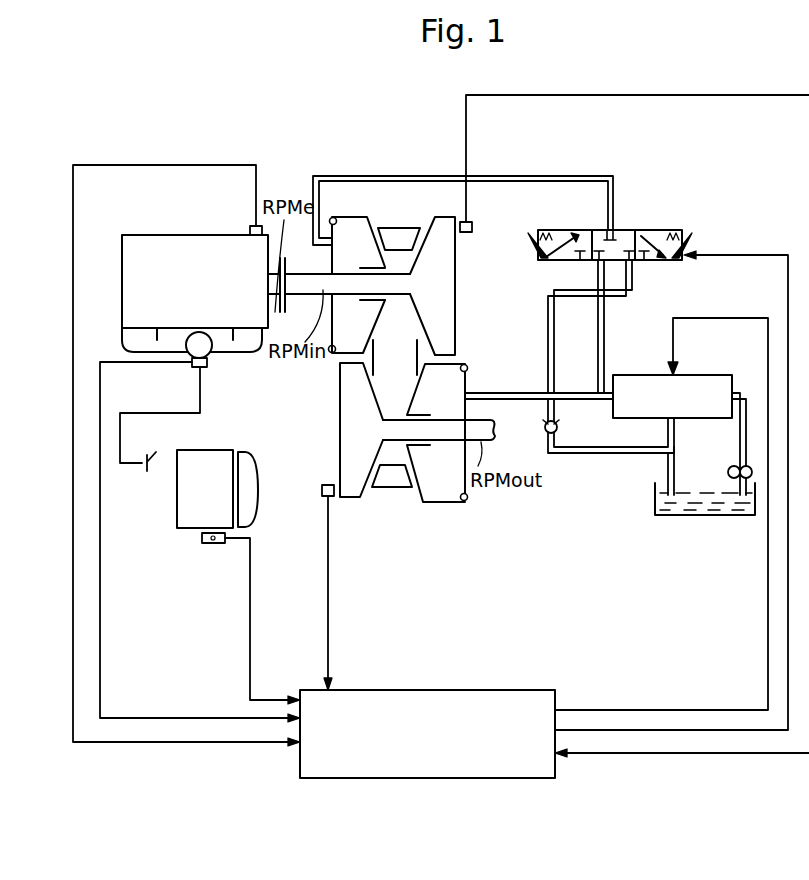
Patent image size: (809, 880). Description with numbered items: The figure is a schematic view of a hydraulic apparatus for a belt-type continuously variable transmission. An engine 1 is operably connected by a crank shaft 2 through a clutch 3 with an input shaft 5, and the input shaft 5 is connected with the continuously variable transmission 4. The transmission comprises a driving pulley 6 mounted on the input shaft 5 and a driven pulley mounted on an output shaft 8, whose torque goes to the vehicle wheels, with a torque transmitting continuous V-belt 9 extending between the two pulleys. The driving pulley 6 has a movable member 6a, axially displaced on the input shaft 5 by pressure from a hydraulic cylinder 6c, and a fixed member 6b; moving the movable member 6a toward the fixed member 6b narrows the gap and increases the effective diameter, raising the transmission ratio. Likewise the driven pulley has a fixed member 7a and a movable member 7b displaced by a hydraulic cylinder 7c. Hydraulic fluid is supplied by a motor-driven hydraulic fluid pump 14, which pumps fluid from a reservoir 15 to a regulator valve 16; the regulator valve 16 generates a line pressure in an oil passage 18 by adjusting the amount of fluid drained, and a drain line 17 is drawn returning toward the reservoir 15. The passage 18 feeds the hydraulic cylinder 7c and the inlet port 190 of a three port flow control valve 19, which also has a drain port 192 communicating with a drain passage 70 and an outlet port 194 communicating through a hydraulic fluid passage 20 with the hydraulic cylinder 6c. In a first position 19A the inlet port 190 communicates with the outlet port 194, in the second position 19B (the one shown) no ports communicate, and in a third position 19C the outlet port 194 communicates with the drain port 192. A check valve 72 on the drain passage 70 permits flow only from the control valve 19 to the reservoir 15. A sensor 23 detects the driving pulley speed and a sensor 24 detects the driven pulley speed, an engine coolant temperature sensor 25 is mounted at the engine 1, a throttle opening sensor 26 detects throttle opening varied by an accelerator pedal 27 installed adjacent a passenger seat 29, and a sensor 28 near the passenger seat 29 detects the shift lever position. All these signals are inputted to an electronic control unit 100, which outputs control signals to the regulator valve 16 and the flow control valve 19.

The engine 1 is at (188, 240).
The crank shaft 2 is at (275, 306).
The clutch 3 is at (287, 272).
The continuously variable transmission 4 is at (403, 170).
The input shaft 5 is at (303, 285).
The driving pulley 6 is at (394, 291).
The movable member 6a is at (345, 358).
The fixed member 6b is at (448, 340).
The hydraulic cylinder 6c is at (353, 225).
The fixed member 7a is at (357, 497).
The movable member 7b is at (450, 497).
The hydraulic cylinder 7c is at (455, 392).
The output shaft 8 is at (492, 437).
The V-belt 9 is at (398, 236).
The hydraulic fluid pump 14 is at (727, 470).
The reservoir 15 is at (654, 497).
The regulator valve 16 is at (712, 374).
The drain line 17 is at (667, 432).
The oil passage 18 is at (605, 350).
The flow control valve 19 is at (631, 237).
The first position 19A is at (574, 229).
The second position 19B is at (626, 229).
The third position 19C is at (660, 226).
The hydraulic fluid passage 20 is at (539, 176).
The sensor 23 is at (467, 233).
The sensor 24 is at (318, 490).
The engine coolant temperature sensor 25 is at (252, 230).
The throttle opening sensor 26 is at (192, 364).
The accelerator pedal 27 is at (160, 419).
The sensor 28 is at (212, 545).
The passenger seat 29 is at (218, 457).
The drain passage 70 is at (547, 346).
The check valve 72 is at (546, 425).
The electronic control unit 100 is at (498, 690).
The inlet port 190 is at (596, 262).
The drain port 192 is at (633, 262).
The outlet port 194 is at (600, 228).